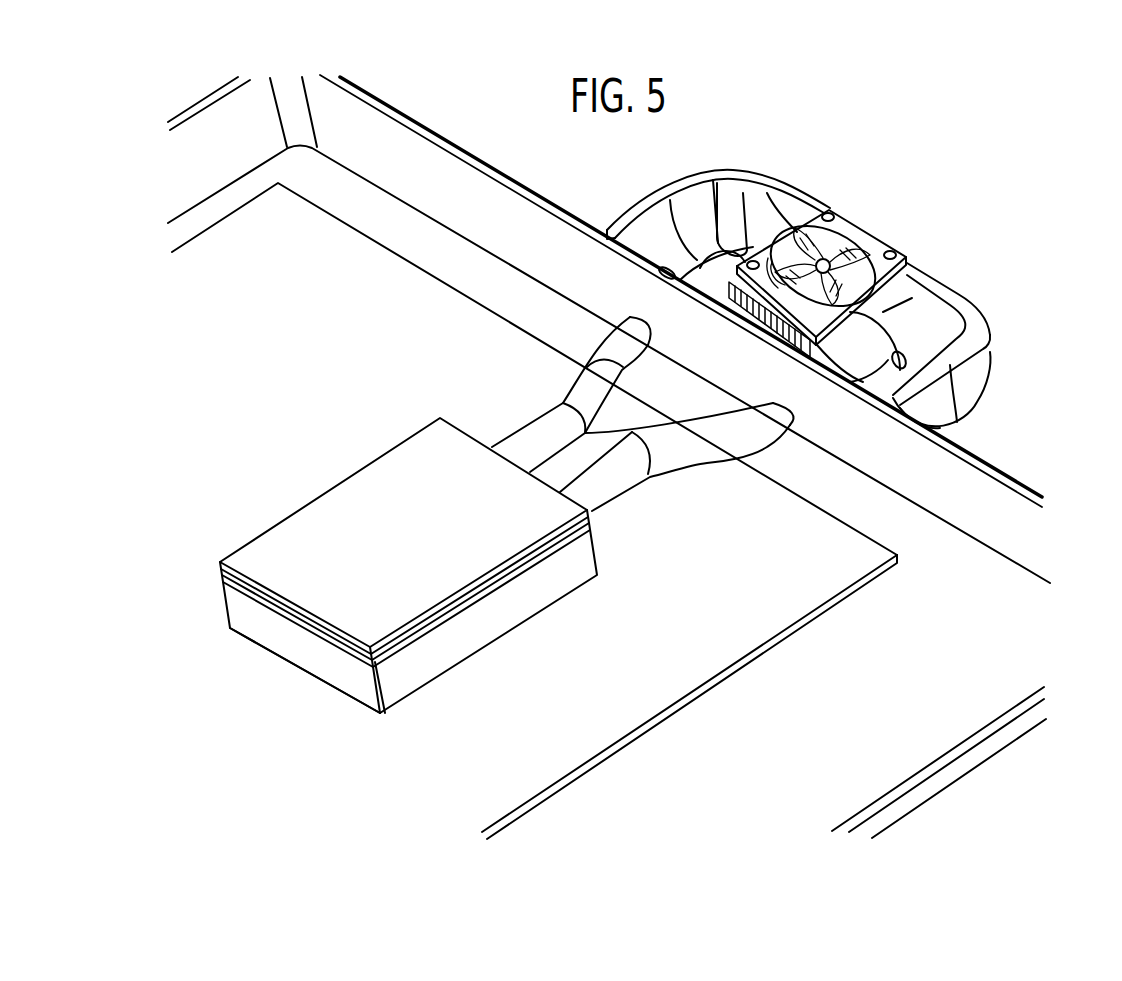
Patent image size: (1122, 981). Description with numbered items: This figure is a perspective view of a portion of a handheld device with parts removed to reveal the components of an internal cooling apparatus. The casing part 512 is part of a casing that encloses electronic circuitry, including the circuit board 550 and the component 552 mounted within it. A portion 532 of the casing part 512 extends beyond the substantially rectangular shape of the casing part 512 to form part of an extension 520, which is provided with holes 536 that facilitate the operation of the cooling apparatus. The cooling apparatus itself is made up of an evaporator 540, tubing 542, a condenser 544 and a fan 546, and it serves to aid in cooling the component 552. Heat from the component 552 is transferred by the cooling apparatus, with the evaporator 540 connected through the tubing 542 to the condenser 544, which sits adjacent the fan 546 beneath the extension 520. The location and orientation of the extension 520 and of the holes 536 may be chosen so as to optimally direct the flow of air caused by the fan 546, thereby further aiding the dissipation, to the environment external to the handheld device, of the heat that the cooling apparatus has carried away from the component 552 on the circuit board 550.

The casing part 512 is at (1012, 485).
The extension 520 is at (916, 169).
The portion of casing part 532 is at (980, 323).
The holes 536 is at (725, 170).
The evaporator 540 is at (292, 537).
The tubing 542 is at (565, 440).
The condenser 544 is at (893, 308).
The fan 546 is at (840, 213).
The circuit board 550 is at (573, 730).
The component 552 is at (310, 658).